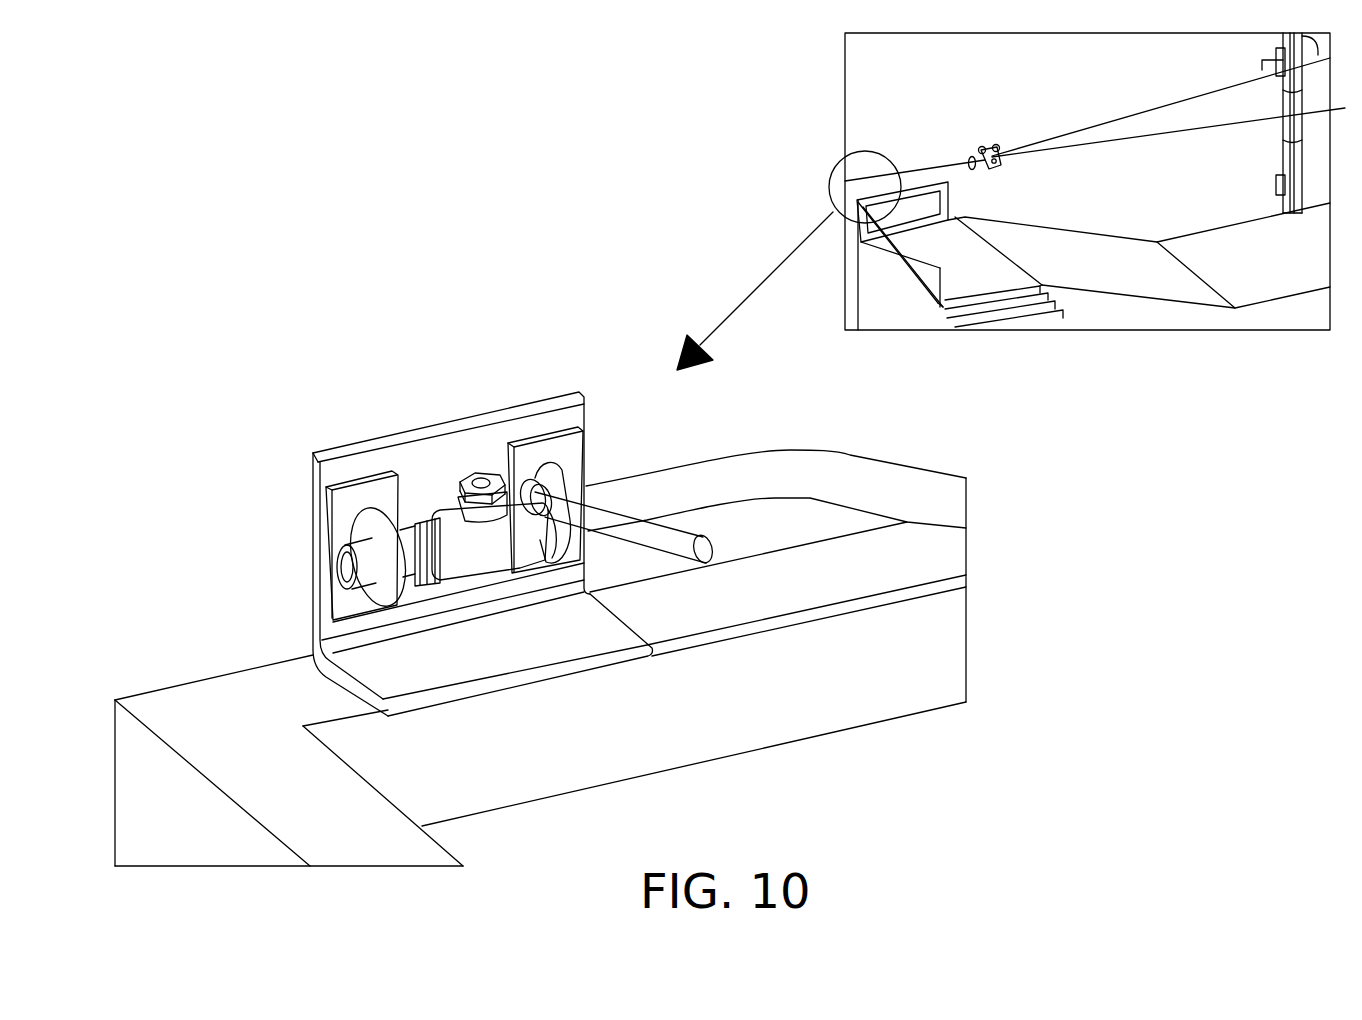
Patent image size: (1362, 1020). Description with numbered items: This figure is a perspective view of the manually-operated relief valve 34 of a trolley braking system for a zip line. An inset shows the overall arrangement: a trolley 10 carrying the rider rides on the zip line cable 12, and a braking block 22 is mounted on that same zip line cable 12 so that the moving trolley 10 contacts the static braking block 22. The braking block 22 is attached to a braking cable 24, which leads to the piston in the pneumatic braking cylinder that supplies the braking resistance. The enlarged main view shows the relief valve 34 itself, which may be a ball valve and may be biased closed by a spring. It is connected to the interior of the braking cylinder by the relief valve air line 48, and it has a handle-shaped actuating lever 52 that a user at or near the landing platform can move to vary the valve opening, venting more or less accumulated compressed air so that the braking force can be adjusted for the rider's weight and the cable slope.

The trolley 10 is at (992, 148).
The zip line cable 12 is at (1198, 131).
The braking block 22 is at (972, 157).
The braking cable 24 is at (1191, 96).
The manually-operated relief valve 34 is at (467, 553).
The relief valve air line 48 is at (905, 493).
The actuating lever 52 is at (693, 527).